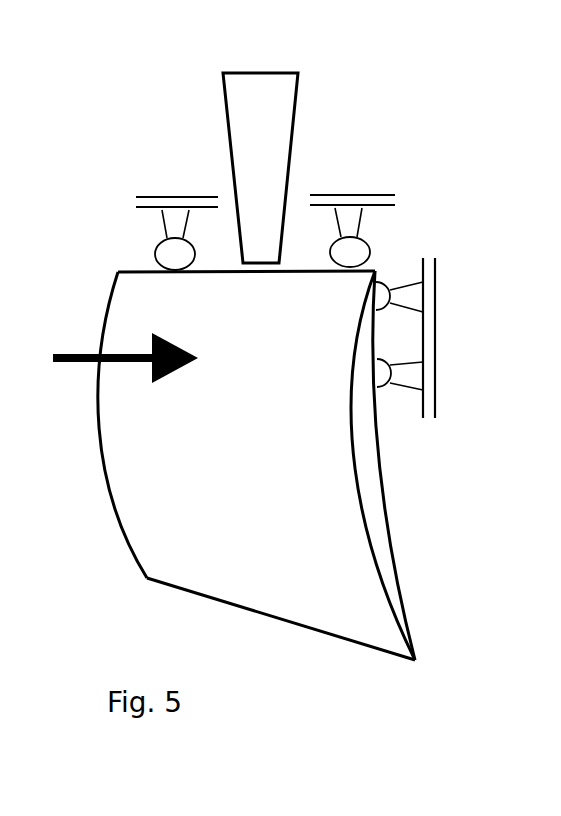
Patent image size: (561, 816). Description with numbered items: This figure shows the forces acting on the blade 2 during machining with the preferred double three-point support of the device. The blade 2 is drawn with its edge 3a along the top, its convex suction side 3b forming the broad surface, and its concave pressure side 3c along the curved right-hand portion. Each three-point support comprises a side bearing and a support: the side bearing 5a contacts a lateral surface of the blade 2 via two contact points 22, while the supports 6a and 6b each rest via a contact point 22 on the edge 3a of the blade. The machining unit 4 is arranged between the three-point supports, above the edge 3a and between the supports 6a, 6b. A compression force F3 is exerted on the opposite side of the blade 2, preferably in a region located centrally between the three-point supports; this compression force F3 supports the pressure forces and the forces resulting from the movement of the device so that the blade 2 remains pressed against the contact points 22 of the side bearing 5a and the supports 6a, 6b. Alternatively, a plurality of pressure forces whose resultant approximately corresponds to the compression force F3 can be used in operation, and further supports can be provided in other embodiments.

The blade 2 is at (394, 507).
The edge of the blade 3a is at (118, 268).
The convex suction side 3b is at (303, 497).
The concave pressure side 3c is at (395, 557).
The machining unit 4 is at (258, 93).
The side bearing 5a is at (425, 312).
The support 6a is at (355, 200).
The support 6b is at (178, 203).
The contact point 22 is at (343, 264).
The compression force F3 is at (72, 354).